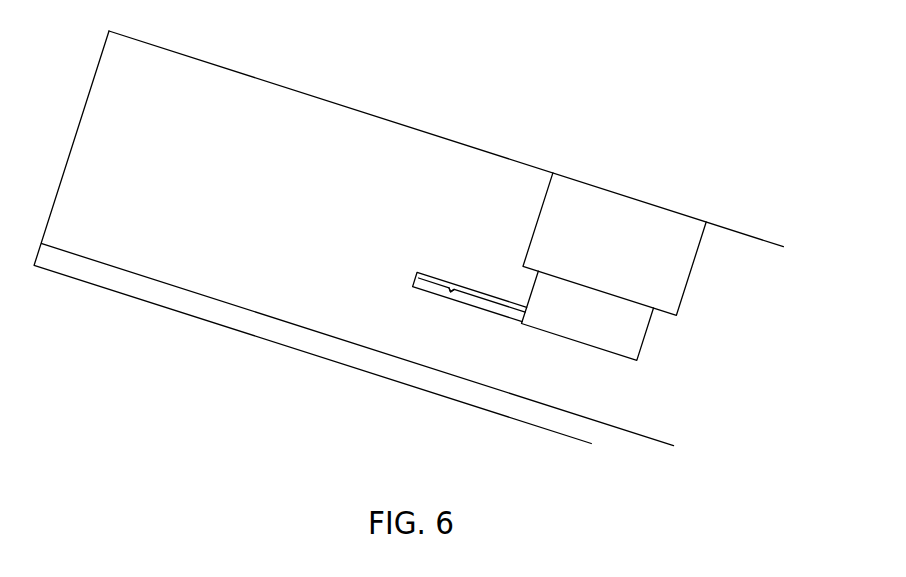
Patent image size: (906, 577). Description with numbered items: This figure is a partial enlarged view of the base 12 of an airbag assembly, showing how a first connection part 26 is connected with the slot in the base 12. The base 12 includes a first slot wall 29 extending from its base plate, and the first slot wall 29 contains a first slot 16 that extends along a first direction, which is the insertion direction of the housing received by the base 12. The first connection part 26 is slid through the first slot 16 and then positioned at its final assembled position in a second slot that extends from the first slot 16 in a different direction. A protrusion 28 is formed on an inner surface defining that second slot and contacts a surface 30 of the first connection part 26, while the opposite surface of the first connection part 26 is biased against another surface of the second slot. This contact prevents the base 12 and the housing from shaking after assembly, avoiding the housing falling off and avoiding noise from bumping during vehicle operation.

The base 12 is at (608, 118).
The first slot 16 is at (630, 328).
The first connection part 26 is at (489, 305).
The protrusion 28 is at (450, 290).
The first slot wall 29 is at (378, 116).
The surface 30 is at (473, 293).